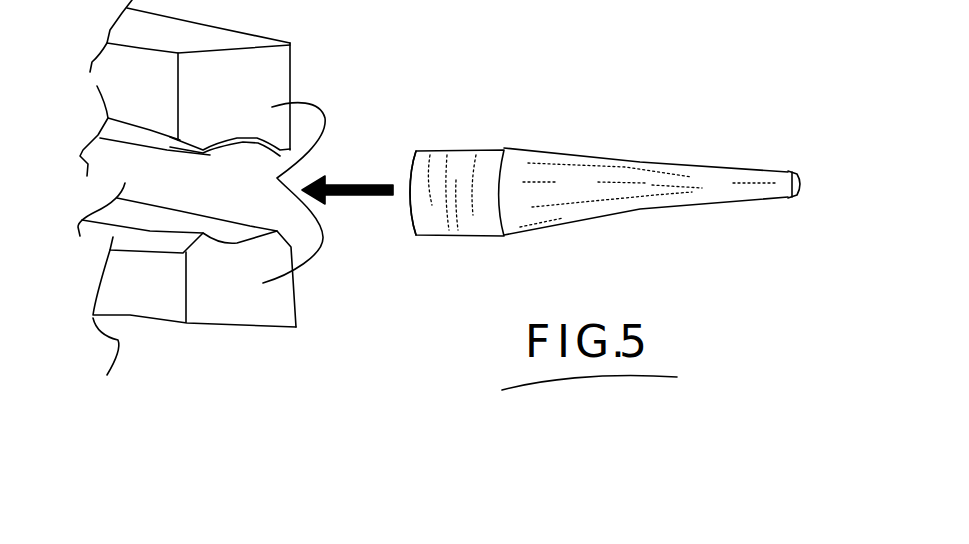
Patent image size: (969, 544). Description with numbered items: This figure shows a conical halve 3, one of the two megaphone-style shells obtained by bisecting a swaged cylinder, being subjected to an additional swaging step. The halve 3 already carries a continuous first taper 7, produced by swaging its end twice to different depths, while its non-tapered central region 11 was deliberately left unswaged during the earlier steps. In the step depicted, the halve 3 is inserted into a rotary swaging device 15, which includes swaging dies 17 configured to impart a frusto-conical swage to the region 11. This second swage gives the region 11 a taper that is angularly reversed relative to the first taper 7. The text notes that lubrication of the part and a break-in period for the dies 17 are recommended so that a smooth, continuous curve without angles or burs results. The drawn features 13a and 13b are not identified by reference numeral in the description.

The conical halve 3 is at (643, 169).
The continuous taper 7 is at (705, 222).
The non-tapered central region 11 is at (481, 185).
The distal end 13a is at (803, 183).
The proximal end 13b is at (411, 222).
The swaging device 15 is at (235, 414).
The swaging dies 17 is at (277, 178).